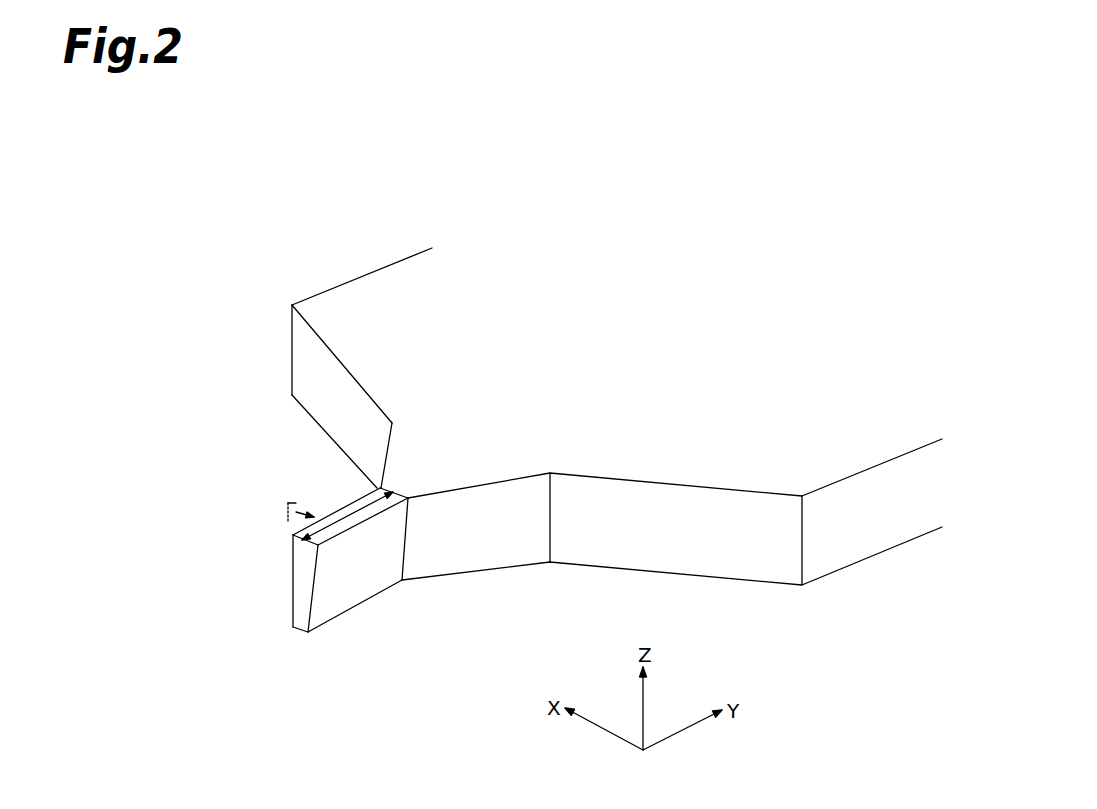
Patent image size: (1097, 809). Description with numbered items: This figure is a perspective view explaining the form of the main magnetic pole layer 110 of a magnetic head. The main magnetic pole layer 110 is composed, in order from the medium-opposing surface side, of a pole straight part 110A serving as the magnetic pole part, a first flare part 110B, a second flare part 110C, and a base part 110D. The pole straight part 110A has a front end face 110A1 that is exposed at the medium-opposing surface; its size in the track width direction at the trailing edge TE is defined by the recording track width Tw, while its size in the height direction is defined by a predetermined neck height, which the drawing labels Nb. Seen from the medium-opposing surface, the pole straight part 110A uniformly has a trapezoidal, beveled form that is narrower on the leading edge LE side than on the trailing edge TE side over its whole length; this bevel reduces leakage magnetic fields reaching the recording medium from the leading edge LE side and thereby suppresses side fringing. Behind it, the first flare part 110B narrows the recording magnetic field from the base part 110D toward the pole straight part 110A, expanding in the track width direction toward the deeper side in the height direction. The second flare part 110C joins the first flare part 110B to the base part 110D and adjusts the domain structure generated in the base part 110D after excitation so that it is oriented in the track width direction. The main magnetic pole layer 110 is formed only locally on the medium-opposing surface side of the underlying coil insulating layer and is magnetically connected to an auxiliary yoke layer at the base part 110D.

The main magnetic pole layer 110 is at (270, 217).
The base part 110D is at (450, 283).
The second flare part 110C is at (343, 338).
The first flare part 110B is at (400, 457).
The pole straight part 110A is at (342, 508).
The front end face 110A1 is at (302, 602).
The recording track width Tw is at (297, 511).
The trailing edge TE is at (291, 533).
The leading edge LE is at (303, 632).
The nozzle edge line Nb is at (355, 510).